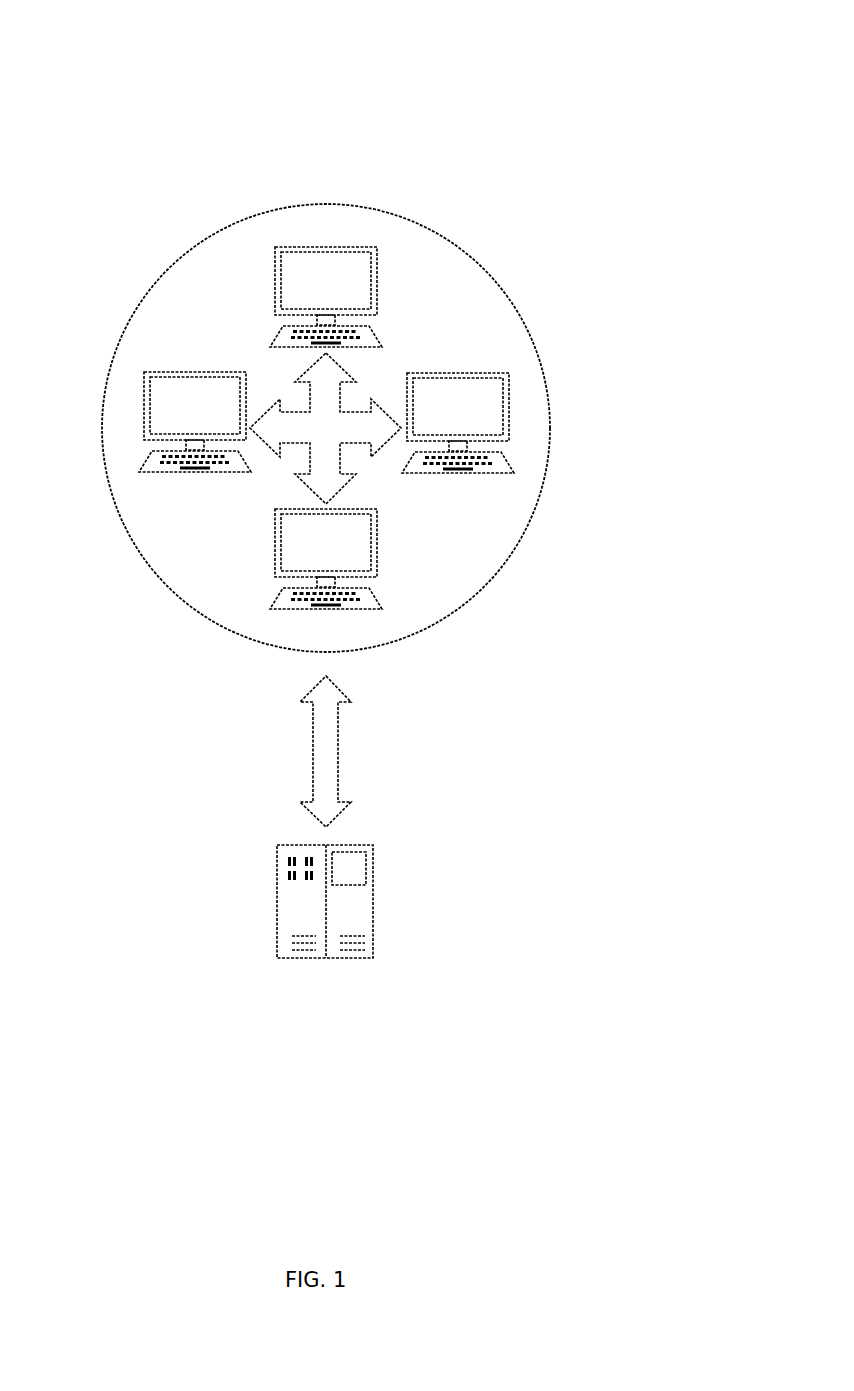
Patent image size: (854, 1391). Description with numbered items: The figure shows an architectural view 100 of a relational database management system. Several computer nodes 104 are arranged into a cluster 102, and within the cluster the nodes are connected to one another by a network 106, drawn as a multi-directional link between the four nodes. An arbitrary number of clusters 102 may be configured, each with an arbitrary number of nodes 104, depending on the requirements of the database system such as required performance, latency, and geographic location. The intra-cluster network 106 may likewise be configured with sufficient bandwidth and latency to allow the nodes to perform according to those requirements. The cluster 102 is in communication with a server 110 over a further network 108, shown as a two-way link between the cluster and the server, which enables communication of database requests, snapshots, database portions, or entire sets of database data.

The architectural view 100 is at (670, 74).
The clusters 102 is at (486, 266).
The computer nodes 104 is at (138, 401).
The network 106 is at (284, 382).
The network 108 is at (304, 749).
The server 110 is at (270, 880).